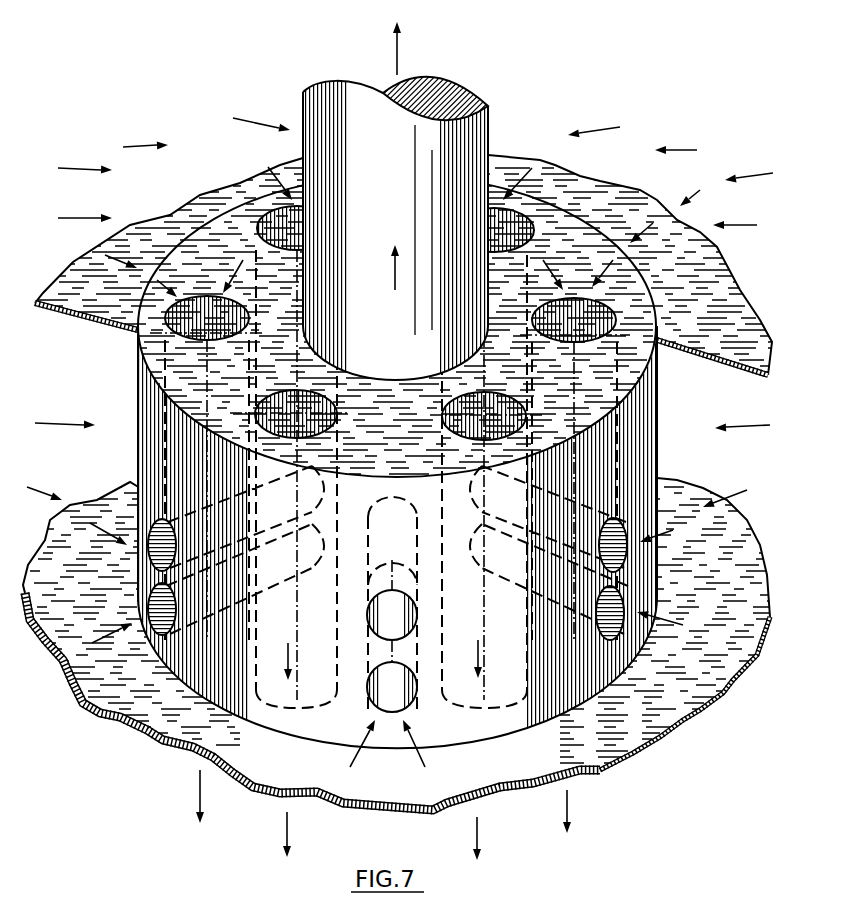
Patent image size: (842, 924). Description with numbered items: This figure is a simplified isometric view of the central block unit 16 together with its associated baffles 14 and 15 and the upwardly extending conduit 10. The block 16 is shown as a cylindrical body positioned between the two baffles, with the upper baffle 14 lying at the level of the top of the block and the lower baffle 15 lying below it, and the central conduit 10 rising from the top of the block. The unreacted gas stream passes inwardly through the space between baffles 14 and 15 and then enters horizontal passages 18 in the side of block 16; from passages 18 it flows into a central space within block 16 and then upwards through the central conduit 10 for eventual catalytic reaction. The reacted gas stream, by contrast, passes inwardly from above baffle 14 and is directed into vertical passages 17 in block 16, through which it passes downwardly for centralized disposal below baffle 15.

The upwardly extending conduit 10 is at (488, 125).
The baffle 14 is at (73, 270).
The baffle 15 is at (65, 666).
The central block unit 16 is at (657, 408).
The vertical passages 17 is at (232, 340).
The horizontal passages 18 is at (148, 592).